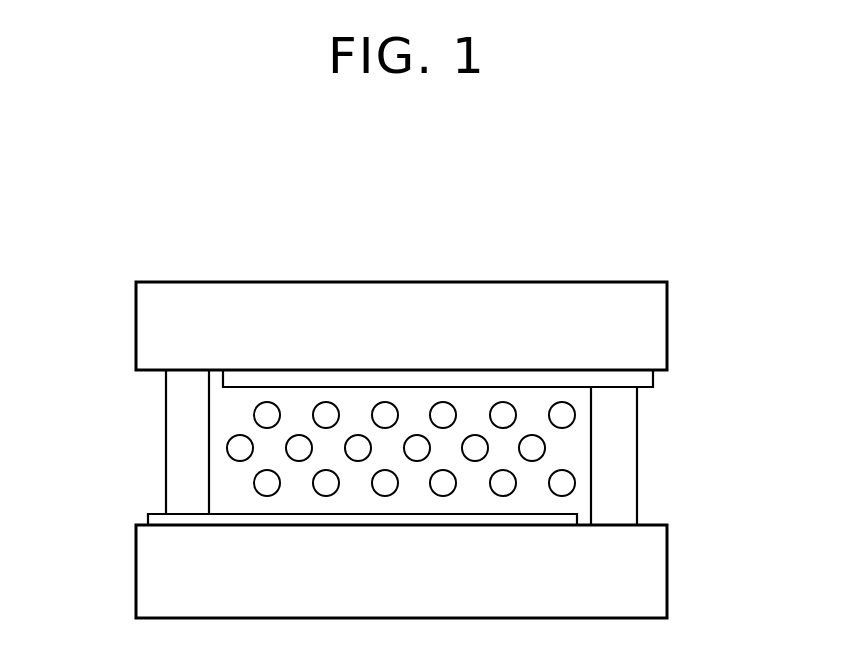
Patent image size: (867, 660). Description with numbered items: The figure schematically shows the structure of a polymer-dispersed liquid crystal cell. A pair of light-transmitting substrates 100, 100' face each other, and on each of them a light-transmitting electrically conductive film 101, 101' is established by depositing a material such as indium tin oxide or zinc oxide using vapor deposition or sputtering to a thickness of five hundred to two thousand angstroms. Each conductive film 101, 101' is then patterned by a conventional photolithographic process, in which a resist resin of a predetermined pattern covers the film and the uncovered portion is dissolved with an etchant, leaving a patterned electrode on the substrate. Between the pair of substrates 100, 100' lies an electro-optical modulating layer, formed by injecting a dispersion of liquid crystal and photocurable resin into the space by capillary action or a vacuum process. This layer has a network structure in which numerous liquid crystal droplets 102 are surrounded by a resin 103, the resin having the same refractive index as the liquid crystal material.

The light-transmitting substrate 100 is at (401, 281).
The light-transmitting substrate 100' is at (465, 571).
The light-transmitting electrically conductive film 101 is at (503, 376).
The light-transmitting electrically conductive film 101' is at (302, 486).
The liquid crystal droplets 102 is at (565, 480).
The resin 103 is at (219, 410).